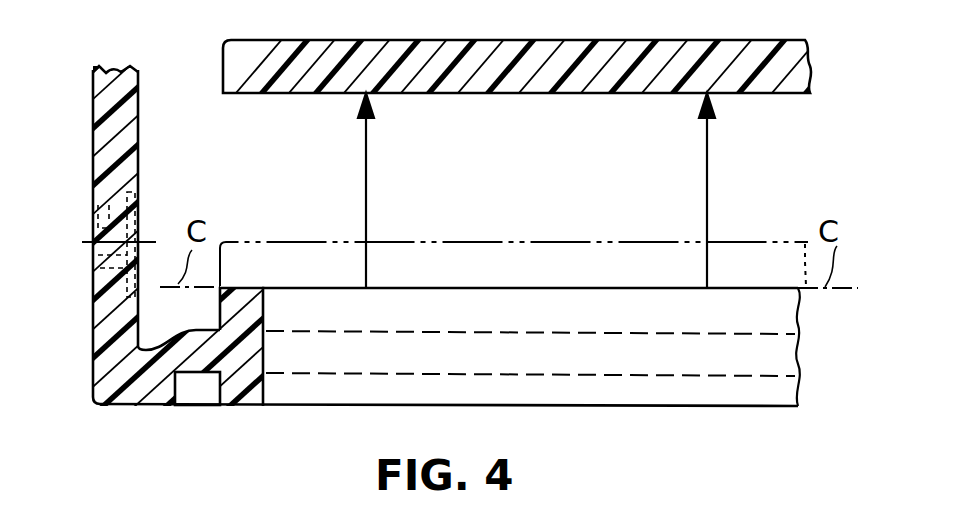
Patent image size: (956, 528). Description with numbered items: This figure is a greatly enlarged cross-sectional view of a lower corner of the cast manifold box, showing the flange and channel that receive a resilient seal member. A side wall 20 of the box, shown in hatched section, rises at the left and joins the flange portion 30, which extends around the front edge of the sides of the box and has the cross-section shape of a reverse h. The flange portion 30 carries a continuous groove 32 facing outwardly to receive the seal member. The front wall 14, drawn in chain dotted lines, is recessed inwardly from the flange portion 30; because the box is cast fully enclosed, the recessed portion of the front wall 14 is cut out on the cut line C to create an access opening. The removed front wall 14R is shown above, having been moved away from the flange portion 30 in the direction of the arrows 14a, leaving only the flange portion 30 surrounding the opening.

The removed front wall 14R is at (497, 40).
The arrows 14a is at (366, 190).
The front wall 14 is at (482, 240).
The side wall 20 is at (95, 206).
The flange portion 30 is at (263, 382).
The groove 32 is at (192, 405).